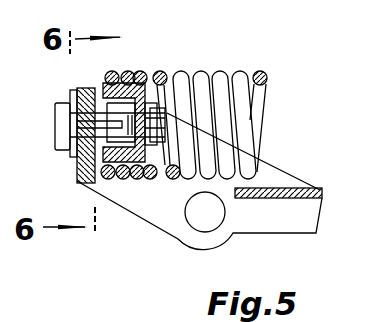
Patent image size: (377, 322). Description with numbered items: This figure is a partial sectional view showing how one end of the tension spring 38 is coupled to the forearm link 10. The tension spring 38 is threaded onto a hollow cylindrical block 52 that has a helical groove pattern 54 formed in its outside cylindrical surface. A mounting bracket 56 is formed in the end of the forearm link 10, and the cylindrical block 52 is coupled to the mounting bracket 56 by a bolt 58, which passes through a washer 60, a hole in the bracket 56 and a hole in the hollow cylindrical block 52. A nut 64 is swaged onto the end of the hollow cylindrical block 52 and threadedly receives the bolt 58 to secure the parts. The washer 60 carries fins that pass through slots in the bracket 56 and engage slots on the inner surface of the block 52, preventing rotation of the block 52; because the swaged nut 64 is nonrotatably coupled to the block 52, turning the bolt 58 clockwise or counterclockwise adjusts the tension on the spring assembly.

The forearm link 10 is at (302, 228).
The tension spring 38 is at (261, 72).
The cylindrical block 52 is at (137, 80).
The helical groove pattern 54 is at (135, 166).
The mounting bracket 56 is at (95, 183).
The bolt 58 is at (58, 117).
The washer 60 is at (72, 93).
The nut 64 is at (158, 168).